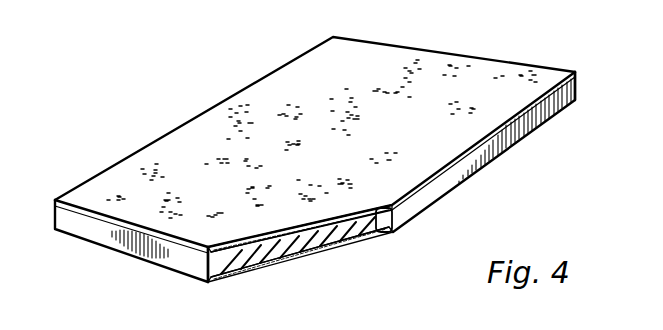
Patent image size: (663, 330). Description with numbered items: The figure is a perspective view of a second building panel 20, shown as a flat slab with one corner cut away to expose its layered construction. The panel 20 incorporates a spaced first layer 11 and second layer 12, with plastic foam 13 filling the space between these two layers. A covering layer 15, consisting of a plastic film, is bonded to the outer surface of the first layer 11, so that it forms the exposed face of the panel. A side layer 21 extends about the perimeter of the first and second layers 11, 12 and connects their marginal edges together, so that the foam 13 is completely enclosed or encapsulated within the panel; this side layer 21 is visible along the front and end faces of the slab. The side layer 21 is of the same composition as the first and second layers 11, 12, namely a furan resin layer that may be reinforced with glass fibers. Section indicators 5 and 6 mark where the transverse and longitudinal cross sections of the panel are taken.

The second building panel 20 is at (295, 37).
The side layer 21 is at (204, 266).
The covering layer 15 is at (366, 204).
The second layer 12 is at (320, 257).
The plastic foam 13 is at (248, 266).
The first layer 11 is at (370, 235).
The section line 5- 5 is at (155, 100).
The section line 6- 6 is at (497, 33).